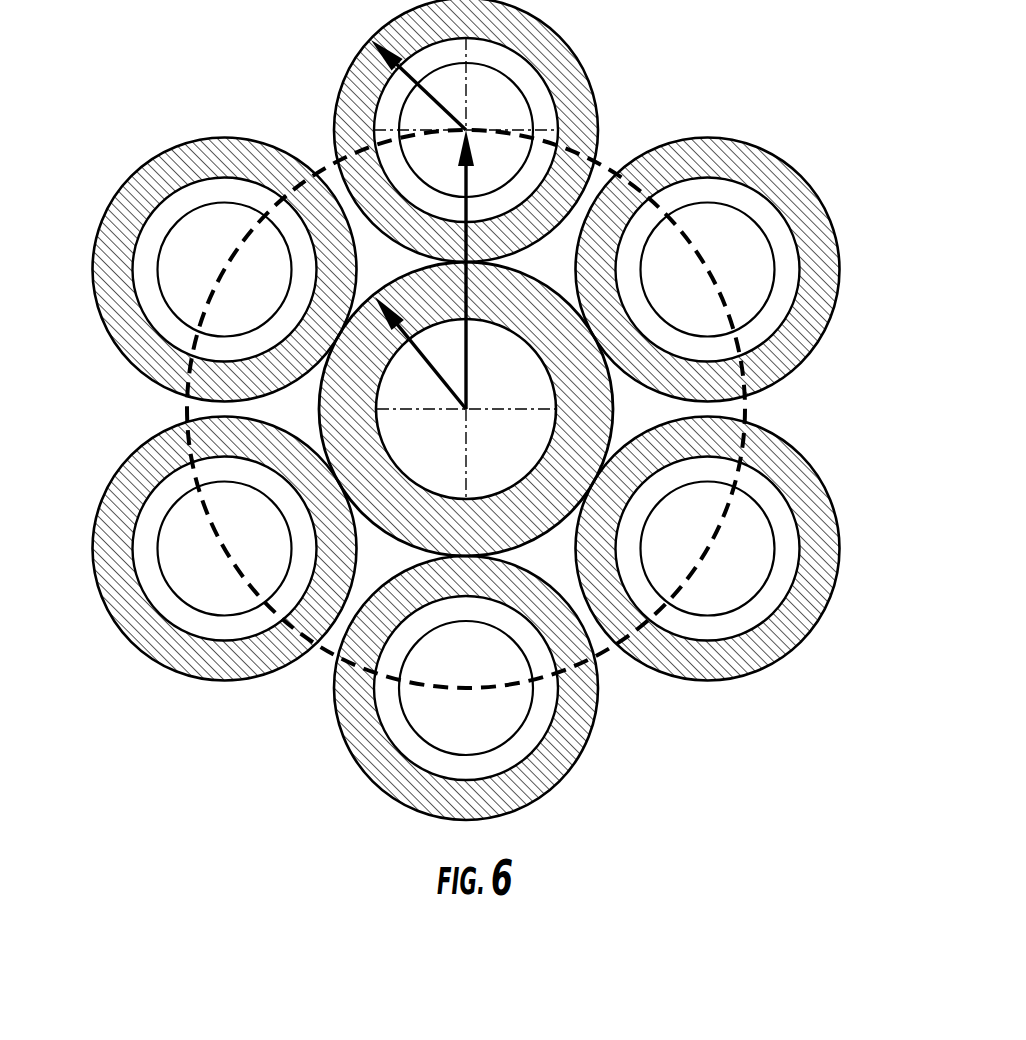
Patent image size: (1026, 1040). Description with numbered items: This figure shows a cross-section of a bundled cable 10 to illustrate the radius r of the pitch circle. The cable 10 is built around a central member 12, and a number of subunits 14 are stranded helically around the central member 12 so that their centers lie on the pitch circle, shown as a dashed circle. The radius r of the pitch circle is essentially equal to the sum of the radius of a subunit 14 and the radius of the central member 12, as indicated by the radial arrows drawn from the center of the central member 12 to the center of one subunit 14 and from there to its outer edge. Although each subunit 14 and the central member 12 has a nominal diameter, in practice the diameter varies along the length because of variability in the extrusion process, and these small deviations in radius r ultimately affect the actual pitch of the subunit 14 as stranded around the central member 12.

The cable / conductor bundle assembly 10 is at (61, 166).
The central member 12 is at (363, 471).
The subunit 14 is at (790, 478).